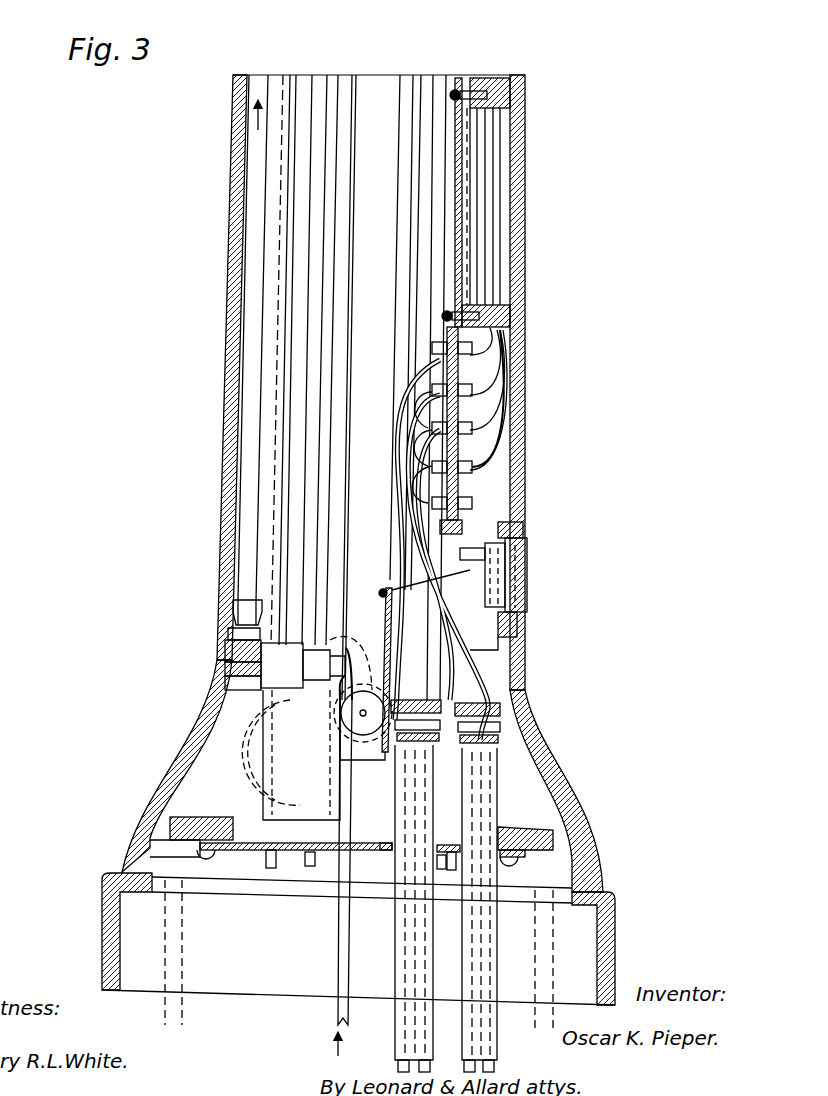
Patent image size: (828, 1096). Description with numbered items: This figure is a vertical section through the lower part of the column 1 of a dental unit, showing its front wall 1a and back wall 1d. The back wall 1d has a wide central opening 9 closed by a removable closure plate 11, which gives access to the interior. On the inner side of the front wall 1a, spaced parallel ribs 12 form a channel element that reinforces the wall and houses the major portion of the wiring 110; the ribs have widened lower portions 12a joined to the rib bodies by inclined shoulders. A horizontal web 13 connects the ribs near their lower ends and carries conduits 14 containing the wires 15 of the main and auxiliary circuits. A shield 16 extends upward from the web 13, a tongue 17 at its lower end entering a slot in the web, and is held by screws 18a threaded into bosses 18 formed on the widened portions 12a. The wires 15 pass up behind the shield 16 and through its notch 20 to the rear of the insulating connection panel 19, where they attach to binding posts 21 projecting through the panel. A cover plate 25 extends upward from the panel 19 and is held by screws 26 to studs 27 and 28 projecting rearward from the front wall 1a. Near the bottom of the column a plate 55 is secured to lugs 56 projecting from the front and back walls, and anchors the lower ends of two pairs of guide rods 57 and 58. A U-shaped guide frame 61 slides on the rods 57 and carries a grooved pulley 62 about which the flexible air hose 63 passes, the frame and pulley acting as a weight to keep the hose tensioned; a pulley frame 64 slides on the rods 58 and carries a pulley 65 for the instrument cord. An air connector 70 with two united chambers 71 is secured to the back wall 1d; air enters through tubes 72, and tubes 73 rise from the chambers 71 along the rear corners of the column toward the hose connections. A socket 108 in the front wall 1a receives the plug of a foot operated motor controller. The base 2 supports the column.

The column 1 is at (528, 419).
The front wall 1a is at (524, 187).
The back wall 1d is at (226, 646).
The base 2 is at (103, 899).
The opening 9 is at (232, 609).
The closure plate 11 is at (219, 572).
The ribs 12 is at (497, 490).
The widened lower portions of ribs 12a is at (514, 770).
The horizontal web 13 is at (518, 738).
The conduits 14 is at (416, 1062).
The wires 15 is at (486, 690).
The shield 16 is at (386, 620).
The tongue 17 is at (392, 752).
The bosses 18 is at (500, 646).
The screws 18a is at (383, 588).
The connection panel 19 is at (462, 358).
The notch 20 is at (453, 534).
The binding posts 21 is at (471, 389).
The cover plate 25 is at (455, 235).
The screws 26 is at (452, 92).
The stud 27 is at (470, 320).
The stud 28 is at (485, 85).
The plate 55 is at (272, 850).
The lugs 56 is at (226, 820).
The guide rods 57 is at (272, 862).
The guide rods 58 is at (310, 866).
The guide frame 61 is at (283, 746).
The pulley 62 is at (353, 668).
The air hose 63 is at (446, 132).
The pulley frame 64 is at (377, 860).
The pulley 65 is at (300, 712).
The air connector 70 is at (226, 677).
The chambers 71 is at (220, 693).
The tubes 72 is at (337, 950).
The tubes 73 is at (243, 506).
The socket 108 is at (527, 586).
The wiring 110 is at (504, 265).